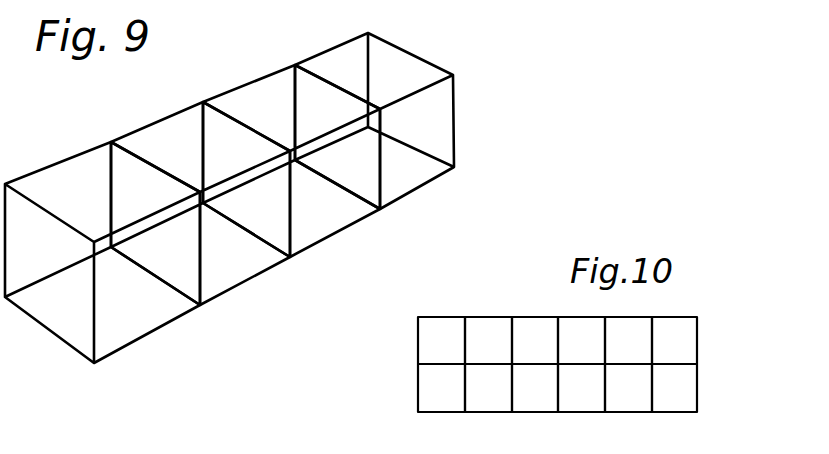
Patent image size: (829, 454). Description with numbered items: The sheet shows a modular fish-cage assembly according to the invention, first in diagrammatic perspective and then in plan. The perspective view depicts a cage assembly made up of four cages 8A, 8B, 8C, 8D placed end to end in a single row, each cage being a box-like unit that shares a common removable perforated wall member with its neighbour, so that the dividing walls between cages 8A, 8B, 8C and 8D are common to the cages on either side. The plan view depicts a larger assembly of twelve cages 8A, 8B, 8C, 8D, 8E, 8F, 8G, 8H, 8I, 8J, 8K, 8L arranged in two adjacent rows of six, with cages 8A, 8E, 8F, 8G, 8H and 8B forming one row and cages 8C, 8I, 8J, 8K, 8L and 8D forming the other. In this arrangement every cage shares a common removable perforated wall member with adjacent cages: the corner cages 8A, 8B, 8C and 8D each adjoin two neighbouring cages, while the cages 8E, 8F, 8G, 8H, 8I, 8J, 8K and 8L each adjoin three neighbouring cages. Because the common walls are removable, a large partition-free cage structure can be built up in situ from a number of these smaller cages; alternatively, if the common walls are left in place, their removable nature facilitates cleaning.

In FIG. 9, the cage 8A is at (86, 180).
In FIG. 10, the cage 8A is at (454, 352).
In FIG. 9, the cage 8B is at (177, 147).
In FIG. 10, the cage 8B is at (687, 352).
In FIG. 9, the cage 8C is at (265, 109).
In FIG. 10, the cage 8C is at (454, 401).
In FIG. 9, the cage 8D is at (353, 74).
In FIG. 10, the cage 8D is at (687, 401).
In FIG. 10, the cage 8E is at (501, 352).
In FIG. 10, the cage 8F is at (547, 352).
In FIG. 10, the cage 8G is at (594, 352).
In FIG. 10, the cage 8H is at (641, 352).
In FIG. 10, the cage 8I is at (501, 401).
In FIG. 10, the cage 8J is at (547, 401).
In FIG. 10, the cage 8K is at (594, 401).
In FIG. 10, the cage 8L is at (641, 401).